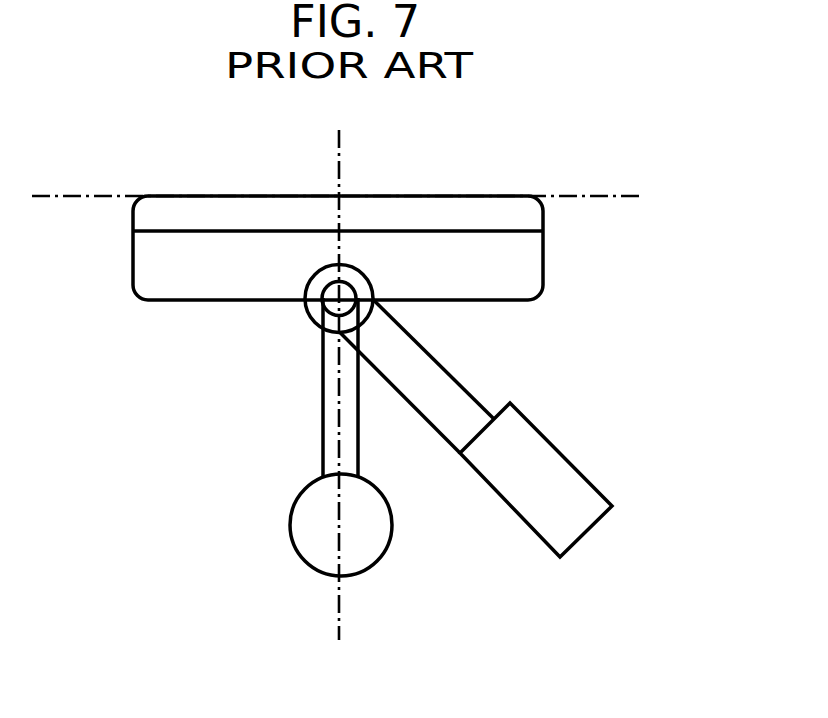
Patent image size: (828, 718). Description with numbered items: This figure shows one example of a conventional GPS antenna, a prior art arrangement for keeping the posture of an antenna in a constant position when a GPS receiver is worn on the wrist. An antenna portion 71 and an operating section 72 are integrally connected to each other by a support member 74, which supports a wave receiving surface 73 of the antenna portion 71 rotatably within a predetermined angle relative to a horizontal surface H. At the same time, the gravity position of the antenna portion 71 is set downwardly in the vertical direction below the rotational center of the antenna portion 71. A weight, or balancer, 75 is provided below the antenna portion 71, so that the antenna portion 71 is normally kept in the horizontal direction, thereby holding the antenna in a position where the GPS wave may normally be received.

The horizontal surface H is at (608, 196).
The antenna portion 71 is at (508, 283).
The operating section 72 is at (543, 470).
The wave receiving surface 73 is at (372, 196).
The support member 74 is at (339, 299).
The weight (balancer) 75 is at (288, 523).